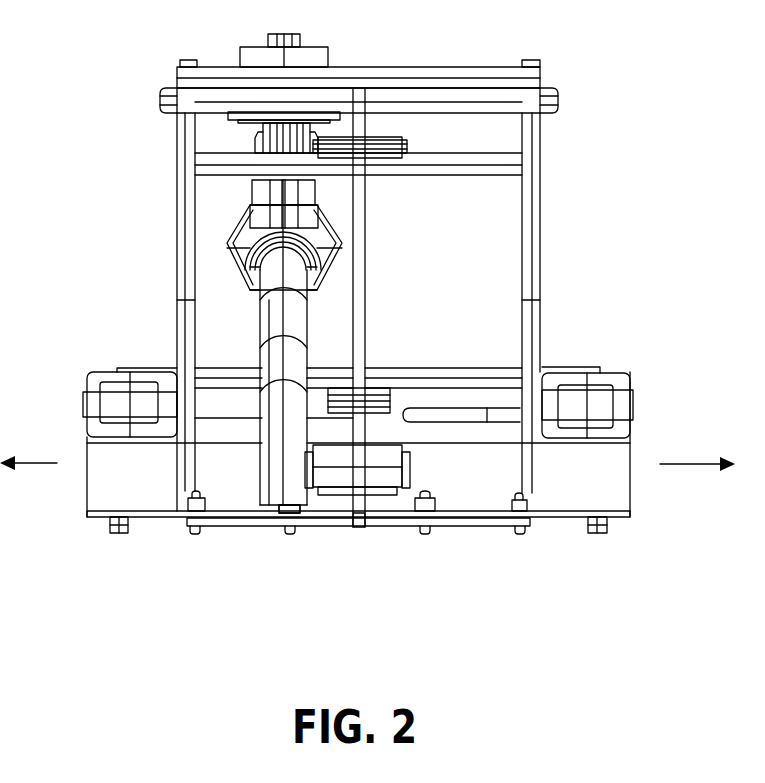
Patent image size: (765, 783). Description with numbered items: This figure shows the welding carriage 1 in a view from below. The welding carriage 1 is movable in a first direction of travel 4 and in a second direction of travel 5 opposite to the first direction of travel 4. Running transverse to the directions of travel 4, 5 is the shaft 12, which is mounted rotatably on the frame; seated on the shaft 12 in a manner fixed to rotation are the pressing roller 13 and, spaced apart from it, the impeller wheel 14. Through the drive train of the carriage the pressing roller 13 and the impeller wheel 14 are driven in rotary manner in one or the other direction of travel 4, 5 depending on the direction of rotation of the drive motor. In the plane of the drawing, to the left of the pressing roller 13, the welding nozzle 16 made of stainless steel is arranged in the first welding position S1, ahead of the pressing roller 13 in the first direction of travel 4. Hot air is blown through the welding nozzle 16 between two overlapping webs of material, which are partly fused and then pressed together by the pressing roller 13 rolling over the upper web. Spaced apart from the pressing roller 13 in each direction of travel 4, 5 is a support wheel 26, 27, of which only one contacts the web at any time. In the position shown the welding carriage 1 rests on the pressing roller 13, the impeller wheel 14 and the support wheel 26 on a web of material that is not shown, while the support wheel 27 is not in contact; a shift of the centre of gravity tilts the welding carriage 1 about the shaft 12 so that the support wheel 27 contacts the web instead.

The welding carriage 1 is at (108, 105).
The first direction of travel 4 is at (30, 463).
The second direction of travel 5 is at (680, 464).
The shaft 12 is at (362, 242).
The pressing roller 13 is at (323, 478).
The impeller wheel 14 is at (377, 147).
The welding nozzle 16 is at (273, 488).
The support wheel 26 is at (85, 398).
The support wheel 27 is at (618, 400).
The first welding position S1 is at (295, 490).